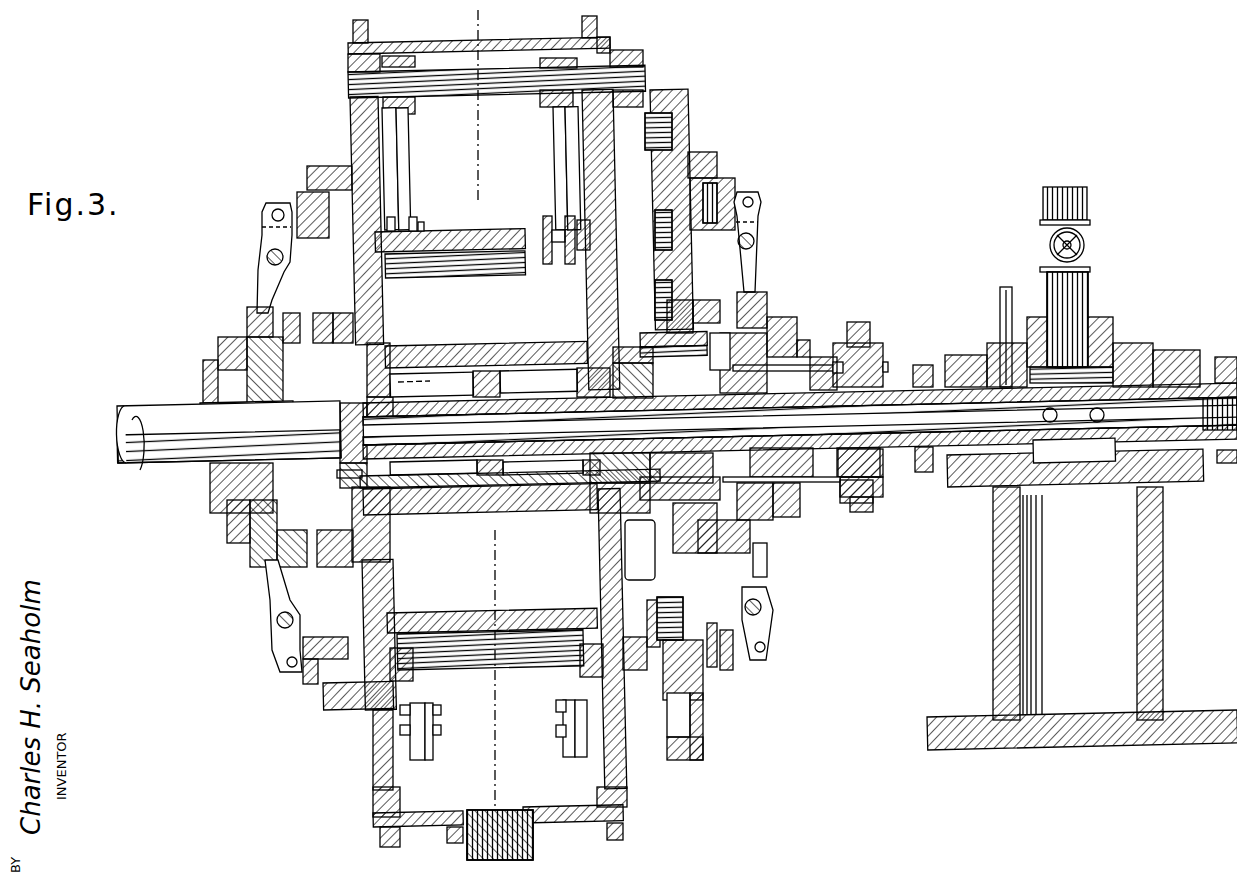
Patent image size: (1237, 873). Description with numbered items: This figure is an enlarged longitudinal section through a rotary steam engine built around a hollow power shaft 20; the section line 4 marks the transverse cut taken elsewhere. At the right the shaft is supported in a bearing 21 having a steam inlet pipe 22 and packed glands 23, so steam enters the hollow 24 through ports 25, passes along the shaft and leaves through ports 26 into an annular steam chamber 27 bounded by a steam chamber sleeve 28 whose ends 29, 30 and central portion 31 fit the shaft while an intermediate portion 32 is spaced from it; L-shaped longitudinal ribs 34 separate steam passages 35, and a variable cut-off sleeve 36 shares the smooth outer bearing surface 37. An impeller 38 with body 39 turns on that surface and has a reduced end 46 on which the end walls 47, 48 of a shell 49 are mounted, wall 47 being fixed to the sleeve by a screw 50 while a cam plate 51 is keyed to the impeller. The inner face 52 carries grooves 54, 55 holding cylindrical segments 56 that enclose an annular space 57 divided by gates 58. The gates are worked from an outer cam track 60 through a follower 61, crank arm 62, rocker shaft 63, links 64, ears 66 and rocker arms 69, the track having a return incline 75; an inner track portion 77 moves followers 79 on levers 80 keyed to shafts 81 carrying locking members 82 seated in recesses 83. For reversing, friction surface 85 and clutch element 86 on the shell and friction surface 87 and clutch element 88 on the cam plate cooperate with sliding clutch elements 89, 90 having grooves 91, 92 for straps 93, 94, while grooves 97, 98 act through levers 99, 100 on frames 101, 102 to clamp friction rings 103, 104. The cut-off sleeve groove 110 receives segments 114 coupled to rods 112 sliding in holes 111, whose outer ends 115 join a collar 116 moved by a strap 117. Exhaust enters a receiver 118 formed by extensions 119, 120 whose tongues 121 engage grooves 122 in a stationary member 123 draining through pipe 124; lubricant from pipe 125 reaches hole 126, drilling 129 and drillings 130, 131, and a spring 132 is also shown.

The section line 4 is at (425, 27).
The power shaft 20 is at (134, 398).
The bearing 21 is at (1163, 536).
The steam inlet pipe 22 is at (1082, 296).
The packed glands or stuffing boxes 23 is at (920, 363).
The hollow of the shaft 24 is at (830, 420).
The holes or ports 25 is at (1074, 450).
The holes or ports 26 is at (497, 441).
The annular space or steam chamber 27 is at (538, 381).
The steam chamber sleeve 28 is at (800, 411).
The end of the steam chamber sleeve 29 is at (433, 467).
The end of the steam chamber sleeve 30 is at (585, 346).
The central portion of the steam chamber sleeve 31 is at (505, 345).
The intermediate portion of the steam chamber sleeve 32 is at (486, 424).
The longitudinal ribs 34 is at (505, 520).
The steam passages 35 is at (673, 433).
The variable cut-off sleeve 36 is at (422, 517).
The cylindrical outer bearing surface 37 is at (453, 345).
The impeller 38 is at (513, 336).
The body of the impeller 39 is at (528, 345).
The reduced end portion of the impeller 46 is at (660, 570).
The end wall of the shell 47 is at (337, 503).
The end wall of the shell 48 is at (590, 560).
The shell 49 is at (491, 172).
The screw 50 is at (337, 475).
The cam plate 51 is at (673, 134).
The inner face of the shell end wall 52 is at (392, 282).
The annular slot or groove 54 is at (357, 247).
The annular slot or groove 55 is at (586, 240).
The cylindrical segments 56 is at (453, 231).
The annular space 57 is at (455, 421).
The gates or abutments 58 is at (530, 236).
The outer cam track 60 is at (690, 718).
The follower 61 is at (689, 100).
The short crank arm 62 is at (620, 146).
The gate rocker shaft 63 is at (646, 72).
The links 64 is at (413, 223).
The ears 66 is at (556, 262).
The rocker arms 69 is at (406, 156).
The incline of the cam track 75 is at (362, 362).
The inner concentric portion of the inner cam track 77 is at (655, 232).
The followers 79 is at (650, 600).
The levers 80 is at (657, 611).
The locking member rocker shafts 81 is at (533, 662).
The locking members 82 is at (496, 655).
The recesses 83 is at (597, 597).
The outer friction surface 85 is at (311, 177).
The inner clutch element 86 is at (318, 318).
The outer friction surface 87 is at (716, 166).
The clutch element 88 is at (697, 291).
The cooperative clutch element 89 is at (236, 540).
The cooperative clutch element 90 is at (807, 505).
The annular groove 91 is at (215, 505).
The annular groove 92 is at (800, 345).
The strap 93 is at (251, 565).
The strap 94 is at (780, 530).
The groove 97 is at (252, 308).
The groove 98 is at (770, 300).
The lever 99 is at (262, 268).
The lever 100 is at (760, 266).
The stationary frame 101 is at (272, 254).
The stationary frame 102 is at (755, 243).
The non-rotatable friction ring 103 is at (300, 196).
The non-rotatable friction ring 104 is at (736, 181).
The annular groove 110 is at (698, 429).
The holes 111 is at (838, 333).
The rods 112 is at (845, 500).
The segments 114 is at (748, 556).
The outer ends of the rods 115 is at (890, 500).
The sliding collar 116 is at (871, 336).
The strap 117 is at (860, 344).
The receiver 118 is at (487, 435).
The extension of the shell end wall 119 is at (356, 130).
The extension of the shell end wall 120 is at (590, 150).
The tongues 121 is at (348, 58).
The grooves 122 is at (352, 42).
The stationary cylindrical member 123 is at (593, 17).
The pipe 124 is at (540, 850).
The lubricant pipe 125 is at (1000, 302).
The hole 126 is at (918, 426).
The drilling 129 is at (362, 381).
The drilling 130 is at (800, 437).
The drilling 131 is at (423, 345).
The spring 132 is at (635, 330).